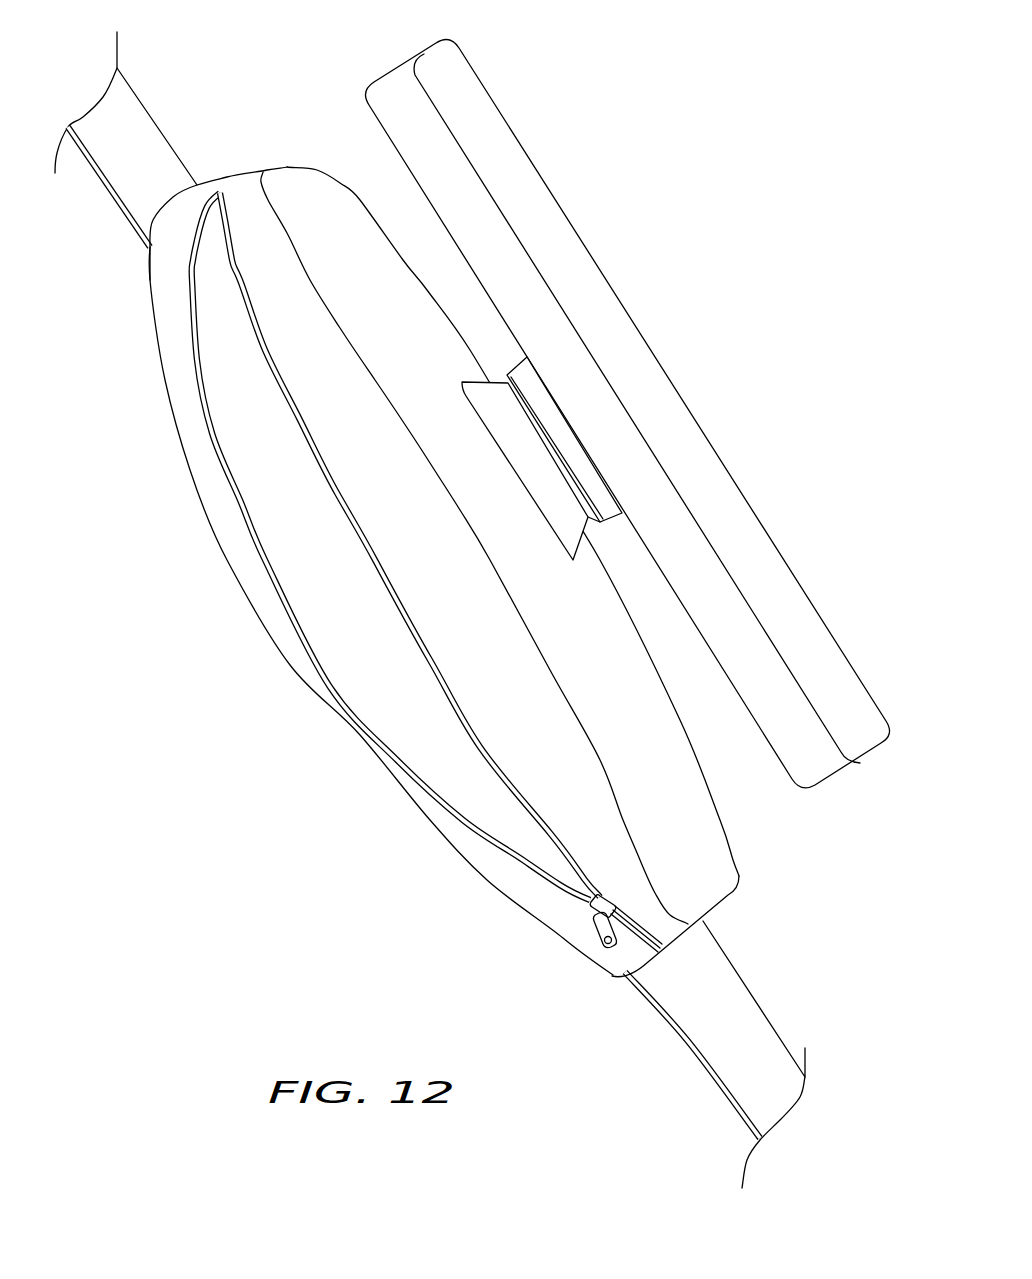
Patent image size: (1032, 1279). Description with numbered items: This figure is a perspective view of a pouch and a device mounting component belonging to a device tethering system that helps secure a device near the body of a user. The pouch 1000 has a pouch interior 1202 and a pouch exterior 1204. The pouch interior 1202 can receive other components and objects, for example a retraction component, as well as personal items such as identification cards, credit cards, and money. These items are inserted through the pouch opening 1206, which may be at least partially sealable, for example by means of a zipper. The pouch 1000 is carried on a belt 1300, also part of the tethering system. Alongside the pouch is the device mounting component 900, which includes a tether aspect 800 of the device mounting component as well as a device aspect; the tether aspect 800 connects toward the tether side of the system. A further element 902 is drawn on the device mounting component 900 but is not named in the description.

The tether aspect of the device mounting component 800 is at (500, 426).
The device mounting component 900 is at (585, 483).
The panel 902 is at (798, 598).
The pouch 1000 is at (568, 937).
The pouch interior 1202 is at (419, 689).
The pouch exterior 1204 is at (243, 576).
The pouch opening 1206 is at (523, 813).
The belt 1300 is at (735, 1006).